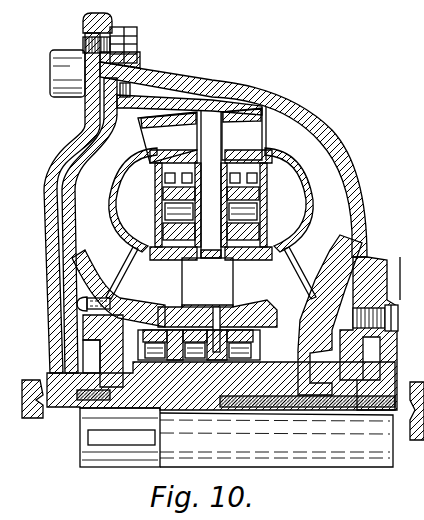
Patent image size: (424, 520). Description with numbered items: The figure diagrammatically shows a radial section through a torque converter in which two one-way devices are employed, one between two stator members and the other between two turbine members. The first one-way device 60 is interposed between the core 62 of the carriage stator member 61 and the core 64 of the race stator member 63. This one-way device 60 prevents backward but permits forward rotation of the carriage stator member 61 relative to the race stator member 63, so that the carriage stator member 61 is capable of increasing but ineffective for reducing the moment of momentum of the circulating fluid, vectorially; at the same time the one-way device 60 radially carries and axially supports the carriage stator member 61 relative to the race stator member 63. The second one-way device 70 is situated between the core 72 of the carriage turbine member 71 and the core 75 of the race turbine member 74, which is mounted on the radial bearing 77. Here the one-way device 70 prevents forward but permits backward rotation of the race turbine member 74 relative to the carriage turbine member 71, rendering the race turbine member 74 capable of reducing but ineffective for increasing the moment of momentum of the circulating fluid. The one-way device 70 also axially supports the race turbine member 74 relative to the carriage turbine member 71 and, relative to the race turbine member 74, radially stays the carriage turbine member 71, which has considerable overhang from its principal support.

The one-way device 60 is at (173, 212).
The carriage stator member 61 is at (166, 126).
The core of the carriage stator member 62 is at (176, 158).
The race stator member 63 is at (150, 288).
The core of the race stator member 64 is at (172, 252).
The one-way device 70 is at (275, 208).
The carriage turbine member 71 is at (240, 125).
The core of the carriage turbine member 72 is at (232, 155).
The race turbine member 74 is at (278, 290).
The core of the race turbine member 75 is at (255, 253).
The radial bearing 77 is at (296, 334).